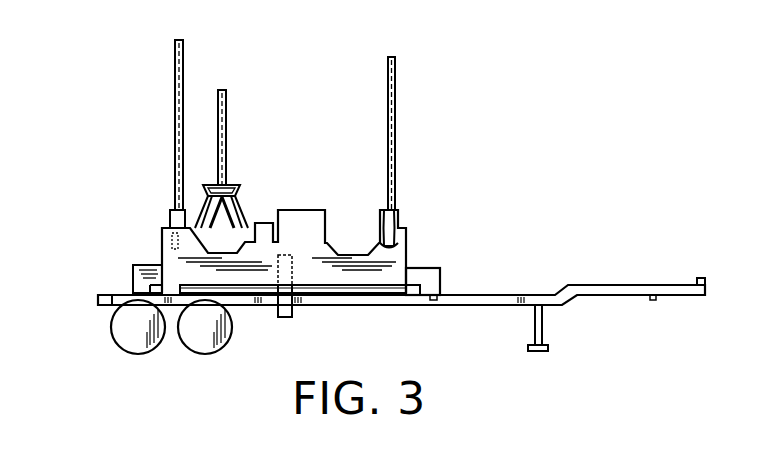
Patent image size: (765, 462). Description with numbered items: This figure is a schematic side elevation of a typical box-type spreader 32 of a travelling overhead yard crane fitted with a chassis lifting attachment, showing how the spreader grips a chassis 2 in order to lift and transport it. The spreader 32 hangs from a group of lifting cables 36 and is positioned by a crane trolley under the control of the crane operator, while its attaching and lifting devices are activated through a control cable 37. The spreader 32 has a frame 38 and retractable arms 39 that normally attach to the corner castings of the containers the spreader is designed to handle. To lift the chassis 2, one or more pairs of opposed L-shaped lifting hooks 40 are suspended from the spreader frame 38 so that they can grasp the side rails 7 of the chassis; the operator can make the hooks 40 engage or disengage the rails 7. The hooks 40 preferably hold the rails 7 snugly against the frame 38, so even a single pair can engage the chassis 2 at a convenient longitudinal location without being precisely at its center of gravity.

The chassis 2 is at (98, 298).
The side rails 7 is at (518, 294).
The spreader 32 is at (409, 243).
The lifting cables 36 is at (175, 74).
The control cable 37 is at (226, 128).
The spreader frame 38 is at (263, 272).
The retractable arms 39 is at (436, 276).
The L-shaped lifting hooks 40 is at (290, 317).